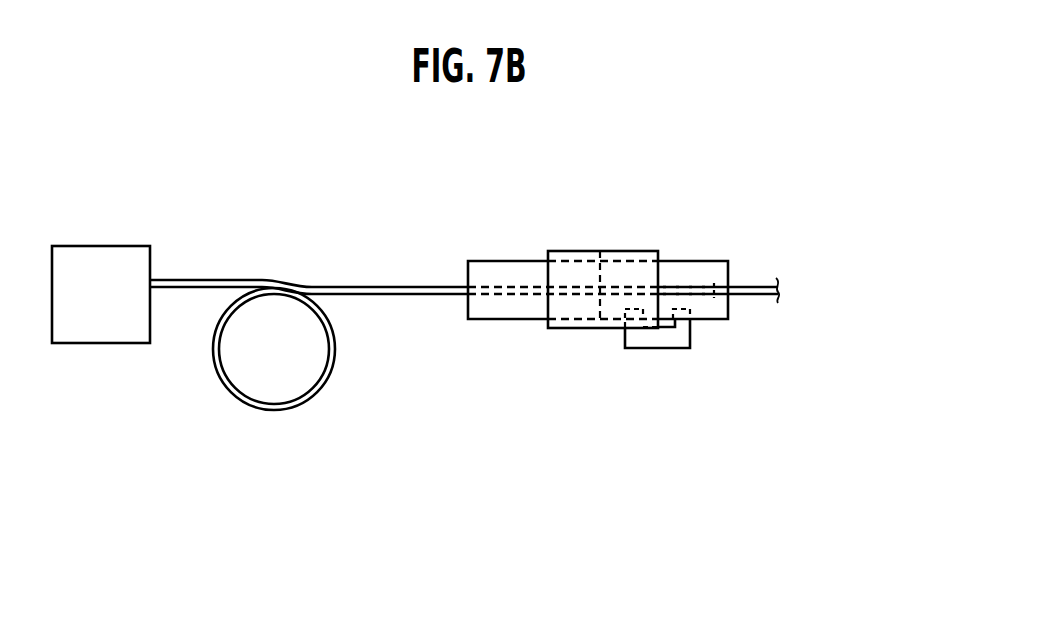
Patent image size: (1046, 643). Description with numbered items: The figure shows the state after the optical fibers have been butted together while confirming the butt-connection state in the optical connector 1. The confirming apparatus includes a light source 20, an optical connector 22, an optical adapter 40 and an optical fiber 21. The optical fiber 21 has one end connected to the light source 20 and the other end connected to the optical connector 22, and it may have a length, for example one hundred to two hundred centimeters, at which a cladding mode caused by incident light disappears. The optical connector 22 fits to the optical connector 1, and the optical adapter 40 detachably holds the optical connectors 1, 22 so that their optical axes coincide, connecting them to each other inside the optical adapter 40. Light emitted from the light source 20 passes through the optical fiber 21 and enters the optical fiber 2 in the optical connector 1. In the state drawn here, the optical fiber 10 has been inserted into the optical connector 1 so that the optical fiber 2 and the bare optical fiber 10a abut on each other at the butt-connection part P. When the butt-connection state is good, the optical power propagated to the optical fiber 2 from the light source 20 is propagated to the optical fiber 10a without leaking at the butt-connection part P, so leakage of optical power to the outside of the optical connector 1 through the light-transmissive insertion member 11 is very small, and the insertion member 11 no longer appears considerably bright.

The light source 20 is at (100, 335).
The optical fiber 21 is at (273, 412).
The optical connector 22 is at (491, 262).
The optical adapter 40 is at (584, 249).
The optical fiber 2 is at (622, 285).
The butt-connection part P is at (637, 278).
The bare optical fiber 10a is at (667, 285).
The optical connector 1 is at (713, 267).
The optical fiber 10 is at (758, 283).
The insertion member 11 is at (678, 340).